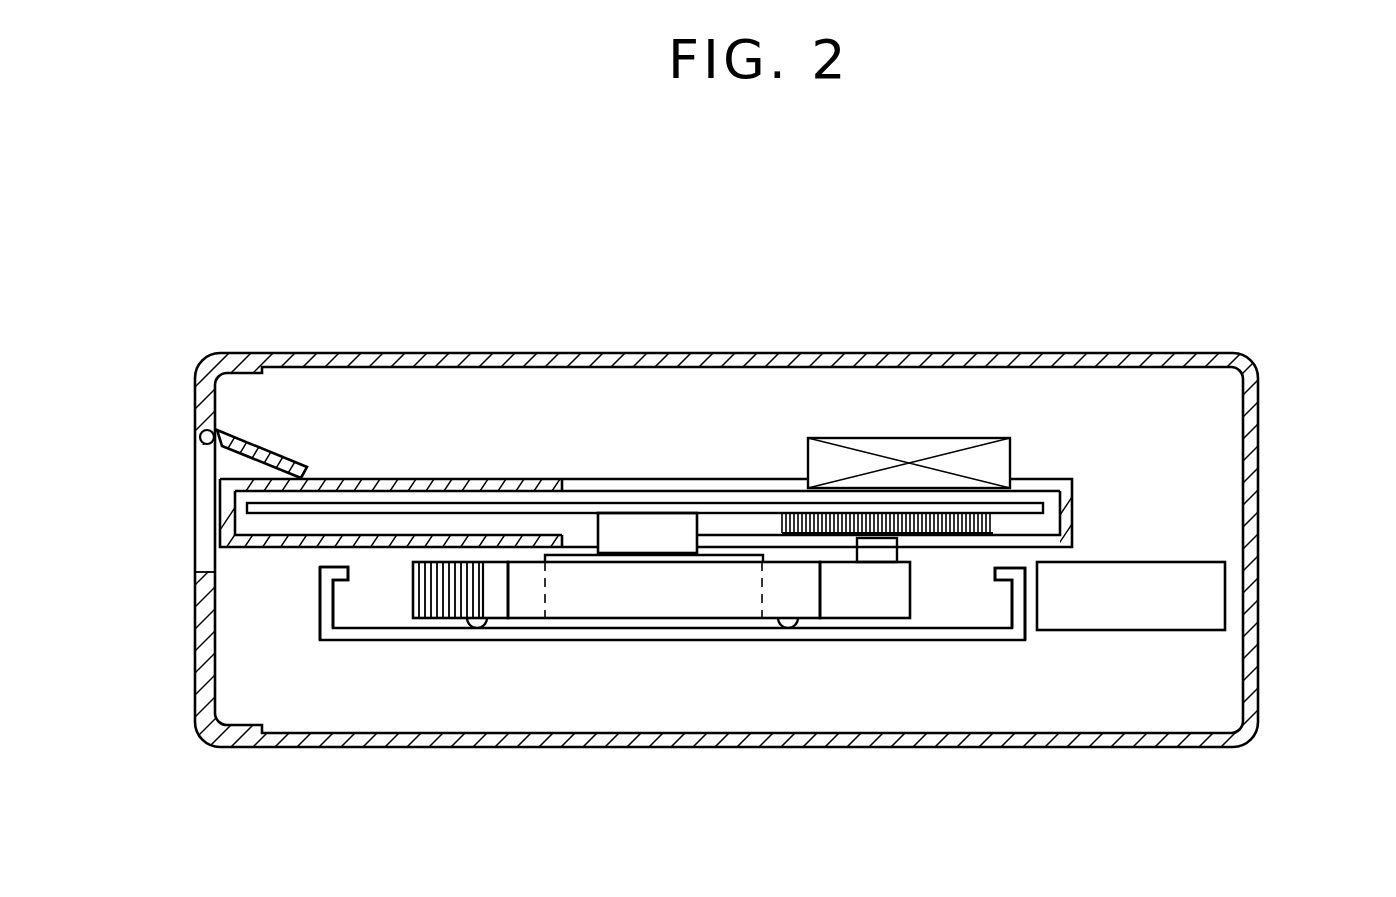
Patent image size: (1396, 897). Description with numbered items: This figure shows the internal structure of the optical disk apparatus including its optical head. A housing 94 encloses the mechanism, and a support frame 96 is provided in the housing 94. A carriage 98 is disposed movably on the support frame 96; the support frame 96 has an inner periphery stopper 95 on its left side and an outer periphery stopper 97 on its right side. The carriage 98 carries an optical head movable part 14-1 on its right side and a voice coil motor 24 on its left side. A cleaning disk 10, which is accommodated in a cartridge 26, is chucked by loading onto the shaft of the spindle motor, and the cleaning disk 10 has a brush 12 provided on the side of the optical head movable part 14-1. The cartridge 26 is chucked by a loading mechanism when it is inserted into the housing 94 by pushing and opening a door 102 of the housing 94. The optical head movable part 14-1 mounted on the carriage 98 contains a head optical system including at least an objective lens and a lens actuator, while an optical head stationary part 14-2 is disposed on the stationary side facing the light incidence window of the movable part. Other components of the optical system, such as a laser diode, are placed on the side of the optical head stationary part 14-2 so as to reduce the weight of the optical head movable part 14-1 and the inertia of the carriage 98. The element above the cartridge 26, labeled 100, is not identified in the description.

The housing 94 is at (633, 353).
The door 102 is at (237, 456).
The cartridge 26 is at (364, 479).
The cleaning disk 10 is at (745, 513).
The magnetic head 100 is at (902, 438).
The brush 12 is at (993, 525).
The optical head movable part 14-1 is at (865, 602).
The optical head stationary part 14-2 is at (1197, 562).
The carriage 98 is at (697, 602).
The voice coil motor 24 is at (450, 606).
The support frame 96 is at (578, 640).
The inner periphery stopper 95 is at (349, 578).
The outer periphery stopper 97 is at (996, 578).